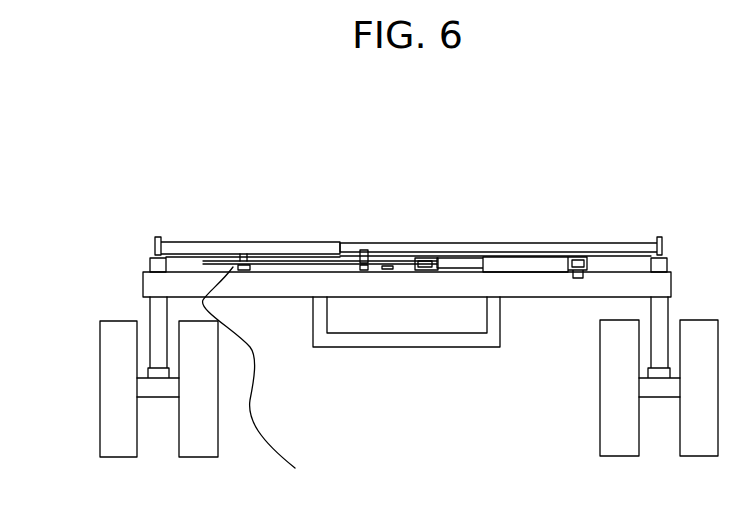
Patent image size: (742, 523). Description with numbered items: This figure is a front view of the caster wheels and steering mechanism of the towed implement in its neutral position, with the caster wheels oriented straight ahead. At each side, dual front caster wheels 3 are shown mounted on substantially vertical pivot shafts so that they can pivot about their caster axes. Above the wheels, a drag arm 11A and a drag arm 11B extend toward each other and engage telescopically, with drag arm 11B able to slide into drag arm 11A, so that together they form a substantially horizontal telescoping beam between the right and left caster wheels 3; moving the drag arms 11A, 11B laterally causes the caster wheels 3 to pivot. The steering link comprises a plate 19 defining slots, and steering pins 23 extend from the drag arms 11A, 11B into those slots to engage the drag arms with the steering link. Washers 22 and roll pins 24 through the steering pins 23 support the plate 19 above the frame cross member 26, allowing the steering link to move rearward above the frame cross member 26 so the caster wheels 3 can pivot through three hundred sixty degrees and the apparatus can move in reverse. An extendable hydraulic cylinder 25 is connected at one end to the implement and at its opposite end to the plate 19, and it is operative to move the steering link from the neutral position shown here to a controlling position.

The front caster wheel 3 is at (193, 457).
The drag arm 11A is at (228, 241).
The drag arm 11B is at (565, 243).
The plate 19 is at (335, 268).
The washer 22 is at (237, 265).
The steering pin 23 is at (338, 248).
The roll pin 24 is at (266, 376).
The hydraulic cylinder 25 is at (497, 267).
The frame cross member 26 is at (548, 297).